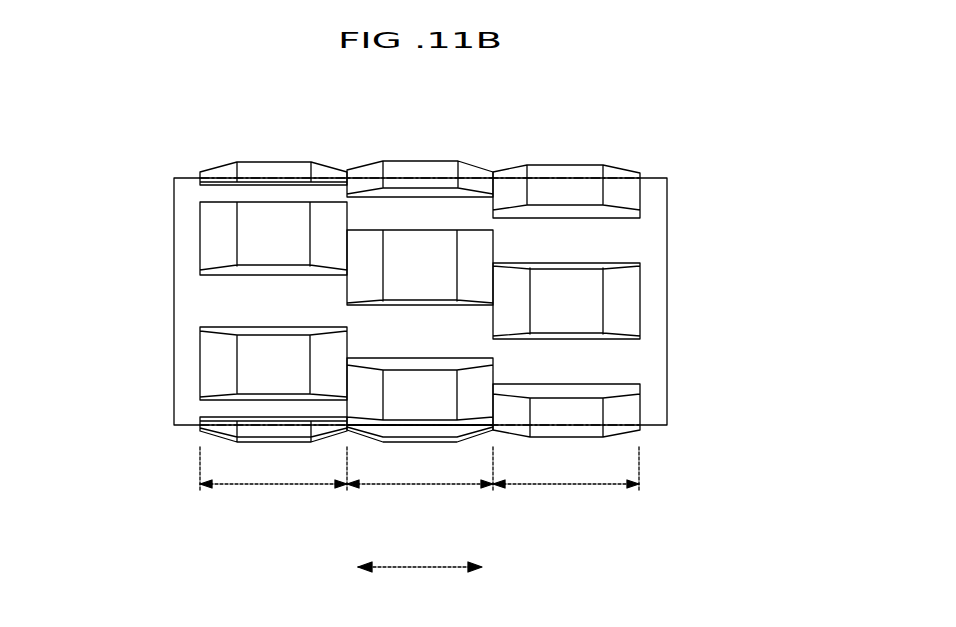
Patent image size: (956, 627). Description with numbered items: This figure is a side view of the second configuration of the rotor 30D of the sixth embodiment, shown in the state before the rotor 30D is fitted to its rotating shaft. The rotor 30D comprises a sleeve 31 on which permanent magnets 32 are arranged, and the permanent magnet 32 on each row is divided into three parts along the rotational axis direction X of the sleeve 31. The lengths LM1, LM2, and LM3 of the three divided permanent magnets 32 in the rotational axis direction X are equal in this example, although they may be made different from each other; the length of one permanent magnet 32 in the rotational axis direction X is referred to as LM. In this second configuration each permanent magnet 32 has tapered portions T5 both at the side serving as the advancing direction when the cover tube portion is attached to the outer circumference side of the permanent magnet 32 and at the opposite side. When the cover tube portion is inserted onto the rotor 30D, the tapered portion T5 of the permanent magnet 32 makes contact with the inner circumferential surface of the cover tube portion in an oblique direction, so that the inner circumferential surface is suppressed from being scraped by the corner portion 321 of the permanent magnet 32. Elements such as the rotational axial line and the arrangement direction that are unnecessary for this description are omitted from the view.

The rotor 30D is at (438, 275).
The sleeve 31 is at (668, 197).
The permanent magnet 32 is at (260, 200).
The corner portion 321 is at (190, 203).
The tapered portion T5 is at (198, 252).
The length of first divided permanent magnet LM1 is at (273, 482).
The length of second divided permanent magnet LM2 is at (420, 482).
The length of third divided permanent magnet LM3 is at (566, 482).
The rotational axis direction X is at (420, 568).